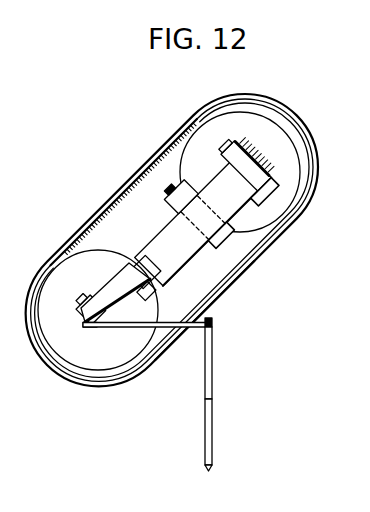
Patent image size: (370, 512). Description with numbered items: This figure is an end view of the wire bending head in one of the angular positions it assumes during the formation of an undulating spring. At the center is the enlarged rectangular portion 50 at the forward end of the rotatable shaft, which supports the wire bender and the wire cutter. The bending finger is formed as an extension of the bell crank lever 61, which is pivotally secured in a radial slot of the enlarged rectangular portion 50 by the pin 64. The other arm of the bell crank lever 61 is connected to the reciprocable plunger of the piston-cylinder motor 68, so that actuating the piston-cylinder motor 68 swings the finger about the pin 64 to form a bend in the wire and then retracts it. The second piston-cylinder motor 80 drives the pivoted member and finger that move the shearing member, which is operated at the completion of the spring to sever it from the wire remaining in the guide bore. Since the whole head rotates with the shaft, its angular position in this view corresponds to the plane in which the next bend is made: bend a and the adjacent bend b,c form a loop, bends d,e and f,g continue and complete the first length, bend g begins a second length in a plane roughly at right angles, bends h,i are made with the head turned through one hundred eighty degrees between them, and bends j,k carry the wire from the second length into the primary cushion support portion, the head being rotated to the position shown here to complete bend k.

The enlarged rectangular portion 50 is at (129, 262).
The bell crank lever 61 is at (204, 186).
The pin 64 is at (235, 285).
The piston-cylinder motor 68 is at (277, 135).
The piston-cylinder motor 80 is at (65, 345).
The bend a is at (208, 468).
The bends b,c is at (209, 447).
The bends d,e is at (209, 392).
The bends f,g is at (212, 324).
The bends h,i is at (150, 363).
The bends j,k is at (82, 328).